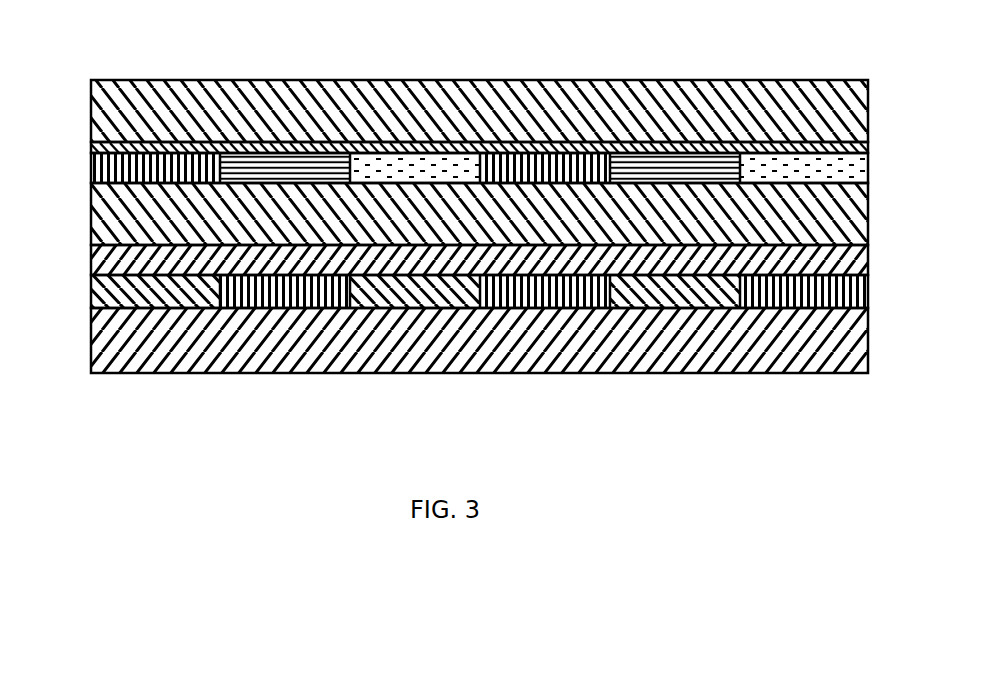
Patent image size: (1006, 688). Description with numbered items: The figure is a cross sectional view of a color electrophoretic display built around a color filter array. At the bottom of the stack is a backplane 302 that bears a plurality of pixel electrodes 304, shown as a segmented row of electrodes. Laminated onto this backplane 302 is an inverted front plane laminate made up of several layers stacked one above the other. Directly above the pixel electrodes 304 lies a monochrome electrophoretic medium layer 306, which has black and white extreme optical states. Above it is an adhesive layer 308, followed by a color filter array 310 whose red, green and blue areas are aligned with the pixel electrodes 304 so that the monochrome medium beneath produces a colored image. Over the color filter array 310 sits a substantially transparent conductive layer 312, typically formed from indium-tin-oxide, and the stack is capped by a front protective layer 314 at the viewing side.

The backplane 302 is at (847, 360).
The pixel electrodes 304 is at (843, 300).
The monochrome electrophoretic medium layer 306 is at (847, 263).
The adhesive layer 308 is at (825, 217).
The color filter array 310 is at (807, 173).
The substantially transparent conductive layer 312 is at (800, 148).
The front protective layer 314 is at (440, 112).